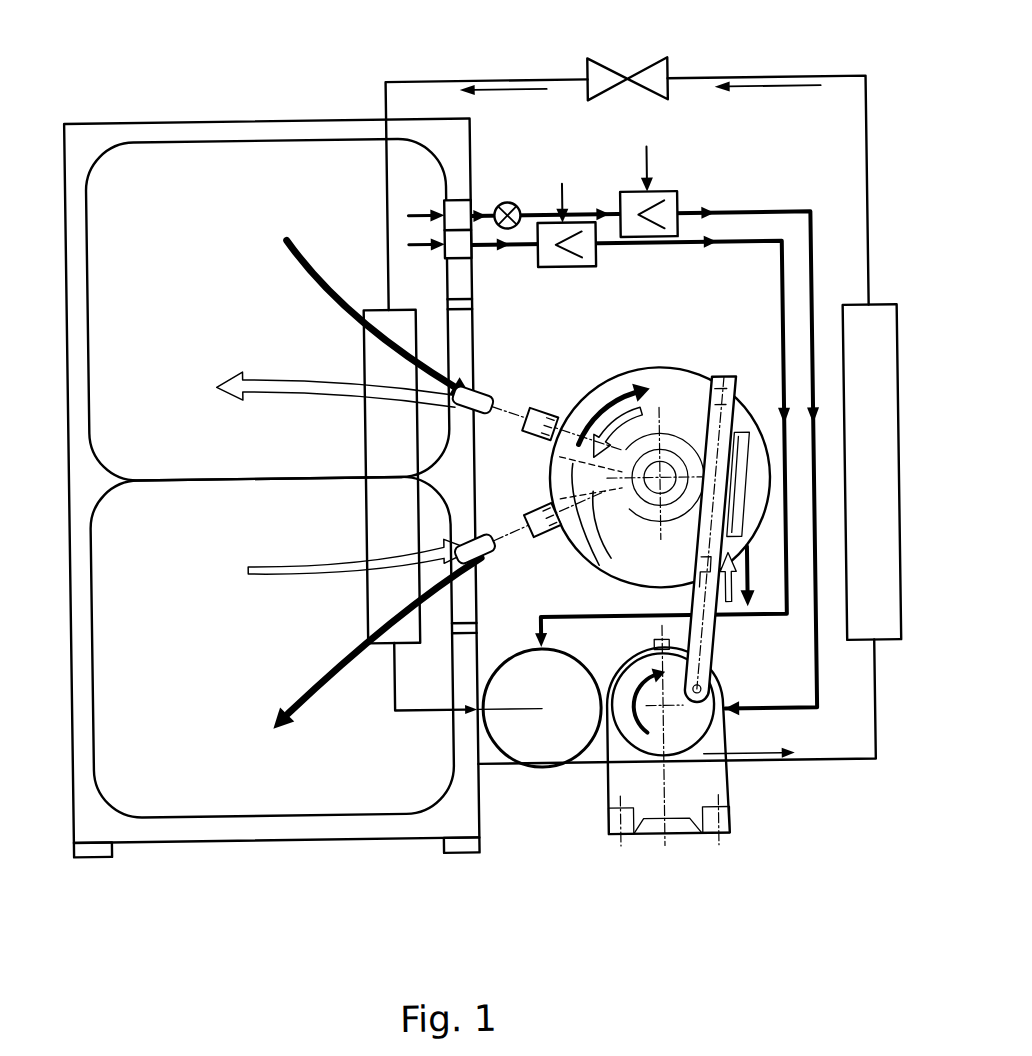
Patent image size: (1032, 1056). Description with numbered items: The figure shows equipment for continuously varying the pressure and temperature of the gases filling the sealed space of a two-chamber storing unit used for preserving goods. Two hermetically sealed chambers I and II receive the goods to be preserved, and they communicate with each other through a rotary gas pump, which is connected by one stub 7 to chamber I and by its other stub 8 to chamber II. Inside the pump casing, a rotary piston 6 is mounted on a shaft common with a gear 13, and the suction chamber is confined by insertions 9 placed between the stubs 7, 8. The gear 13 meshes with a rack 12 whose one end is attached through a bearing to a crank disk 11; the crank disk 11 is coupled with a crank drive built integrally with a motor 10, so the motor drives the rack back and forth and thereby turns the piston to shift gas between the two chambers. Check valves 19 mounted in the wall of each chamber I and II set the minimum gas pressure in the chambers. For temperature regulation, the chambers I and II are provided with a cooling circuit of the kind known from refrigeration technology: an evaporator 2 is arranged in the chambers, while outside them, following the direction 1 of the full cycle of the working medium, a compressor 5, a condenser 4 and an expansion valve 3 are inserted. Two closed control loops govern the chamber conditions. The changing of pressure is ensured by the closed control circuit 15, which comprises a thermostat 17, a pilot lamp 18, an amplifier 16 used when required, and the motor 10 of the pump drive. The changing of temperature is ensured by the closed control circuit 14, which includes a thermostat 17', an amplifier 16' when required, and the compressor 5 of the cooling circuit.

The direction of the full cycle of the working medium 1 is at (780, 82).
The evaporator 2 is at (374, 347).
The expansion valve 3 is at (656, 82).
The condenser 4 is at (893, 620).
The compressor 5 is at (529, 735).
The rotary piston 6 is at (645, 374).
The stub 7 is at (533, 412).
The stub 8 is at (535, 540).
The insertions 9 is at (594, 560).
The motor 10 is at (724, 781).
The crank disk 11 is at (640, 742).
The rack 12 is at (727, 380).
The gear 13 is at (671, 430).
The closed control circuit 14 is at (785, 281).
The closed control circuit 15 is at (789, 214).
The amplifier 16 is at (663, 191).
The amplifier 16' is at (567, 252).
The thermostat 17 is at (399, 195).
The thermostat 17' is at (398, 252).
The pilot lamp 18 is at (512, 202).
The check valves 19 is at (465, 304).
The hermetically sealed chamber I is at (197, 179).
The hermetically sealed chamber II is at (198, 776).